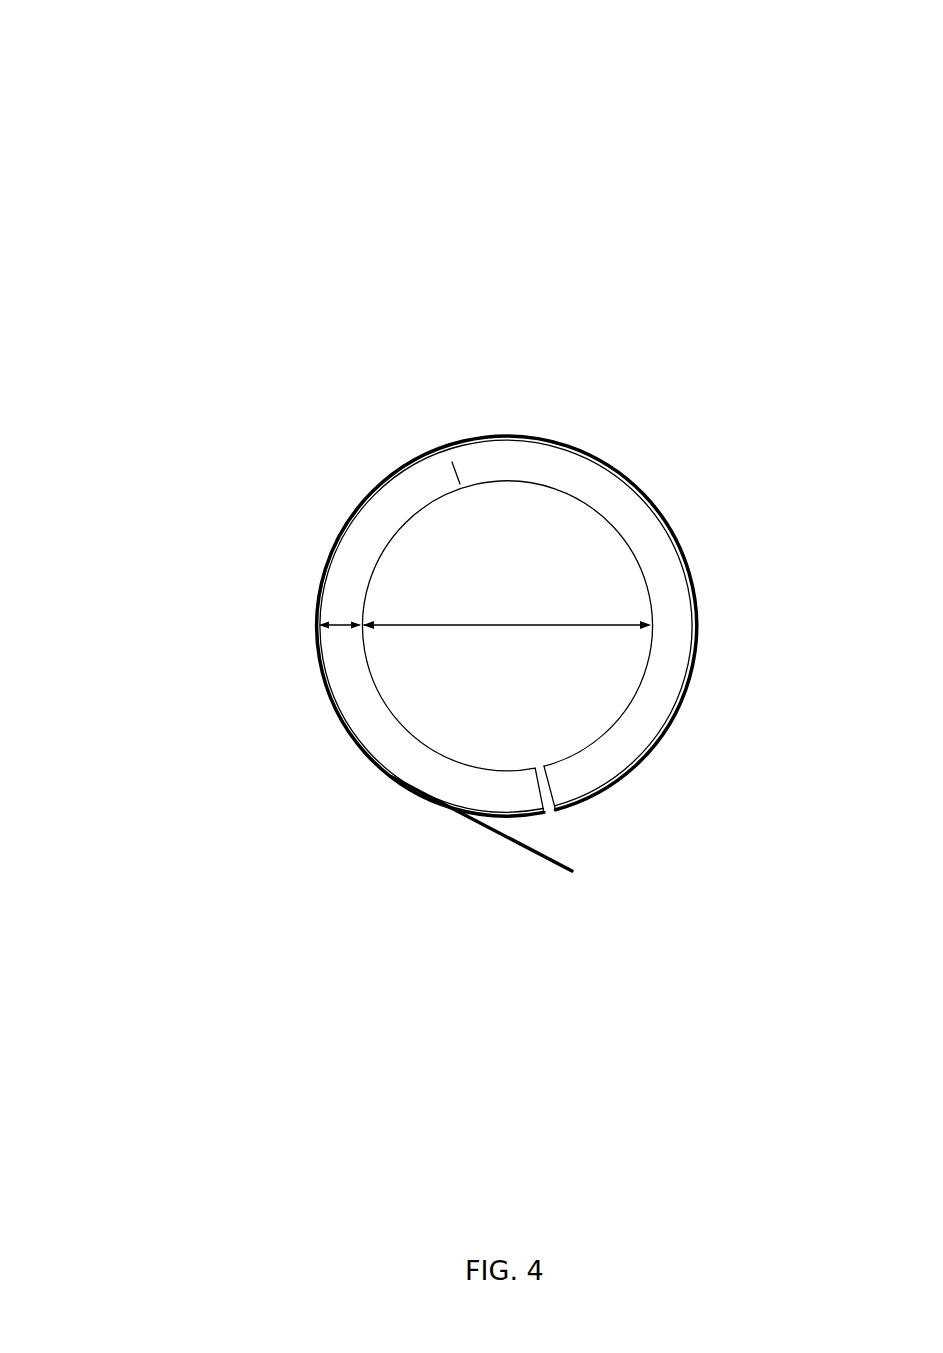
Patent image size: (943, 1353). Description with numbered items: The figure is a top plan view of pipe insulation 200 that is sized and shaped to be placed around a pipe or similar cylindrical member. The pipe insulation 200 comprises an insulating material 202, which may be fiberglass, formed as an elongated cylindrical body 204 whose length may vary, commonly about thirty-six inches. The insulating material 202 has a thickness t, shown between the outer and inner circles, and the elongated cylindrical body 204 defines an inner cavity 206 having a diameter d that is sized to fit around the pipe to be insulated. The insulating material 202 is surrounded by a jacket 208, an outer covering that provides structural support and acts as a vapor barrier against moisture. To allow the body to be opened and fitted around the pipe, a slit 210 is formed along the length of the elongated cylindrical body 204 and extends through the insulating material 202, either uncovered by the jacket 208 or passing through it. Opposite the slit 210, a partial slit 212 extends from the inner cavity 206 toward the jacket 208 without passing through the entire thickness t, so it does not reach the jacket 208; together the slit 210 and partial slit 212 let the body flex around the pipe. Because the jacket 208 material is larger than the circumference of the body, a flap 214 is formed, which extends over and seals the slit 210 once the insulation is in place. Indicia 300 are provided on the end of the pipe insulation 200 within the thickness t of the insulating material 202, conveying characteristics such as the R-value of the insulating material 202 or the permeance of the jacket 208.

The pipe insulation 200 is at (84, 76).
The insulating material 202 is at (625, 735).
The elongated cylindrical body 204 is at (252, 702).
The inner cavity 206 is at (559, 674).
The jacket 208 is at (677, 542).
The slit 210 is at (537, 768).
The partial slit 212 is at (458, 473).
The flap 214 is at (542, 858).
The indicia 300 is at (670, 680).